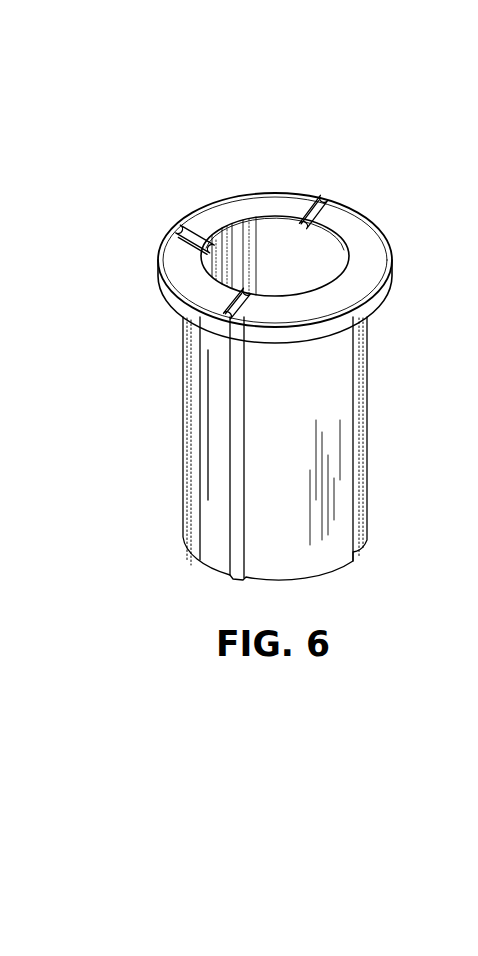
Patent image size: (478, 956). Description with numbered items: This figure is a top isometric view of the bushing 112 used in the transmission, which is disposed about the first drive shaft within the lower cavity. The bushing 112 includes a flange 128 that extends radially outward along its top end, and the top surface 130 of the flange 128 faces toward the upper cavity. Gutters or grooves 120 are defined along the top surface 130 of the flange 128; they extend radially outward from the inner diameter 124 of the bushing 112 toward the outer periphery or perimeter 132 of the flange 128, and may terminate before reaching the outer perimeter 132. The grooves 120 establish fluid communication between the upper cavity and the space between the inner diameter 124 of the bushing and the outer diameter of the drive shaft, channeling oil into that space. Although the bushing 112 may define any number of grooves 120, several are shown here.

The bushing 112 is at (343, 158).
The grooves 120 is at (320, 200).
The inner diameter 124 is at (309, 261).
The flange 128 is at (230, 206).
The top surface 130 is at (190, 275).
The outer perimeter 132 is at (224, 327).